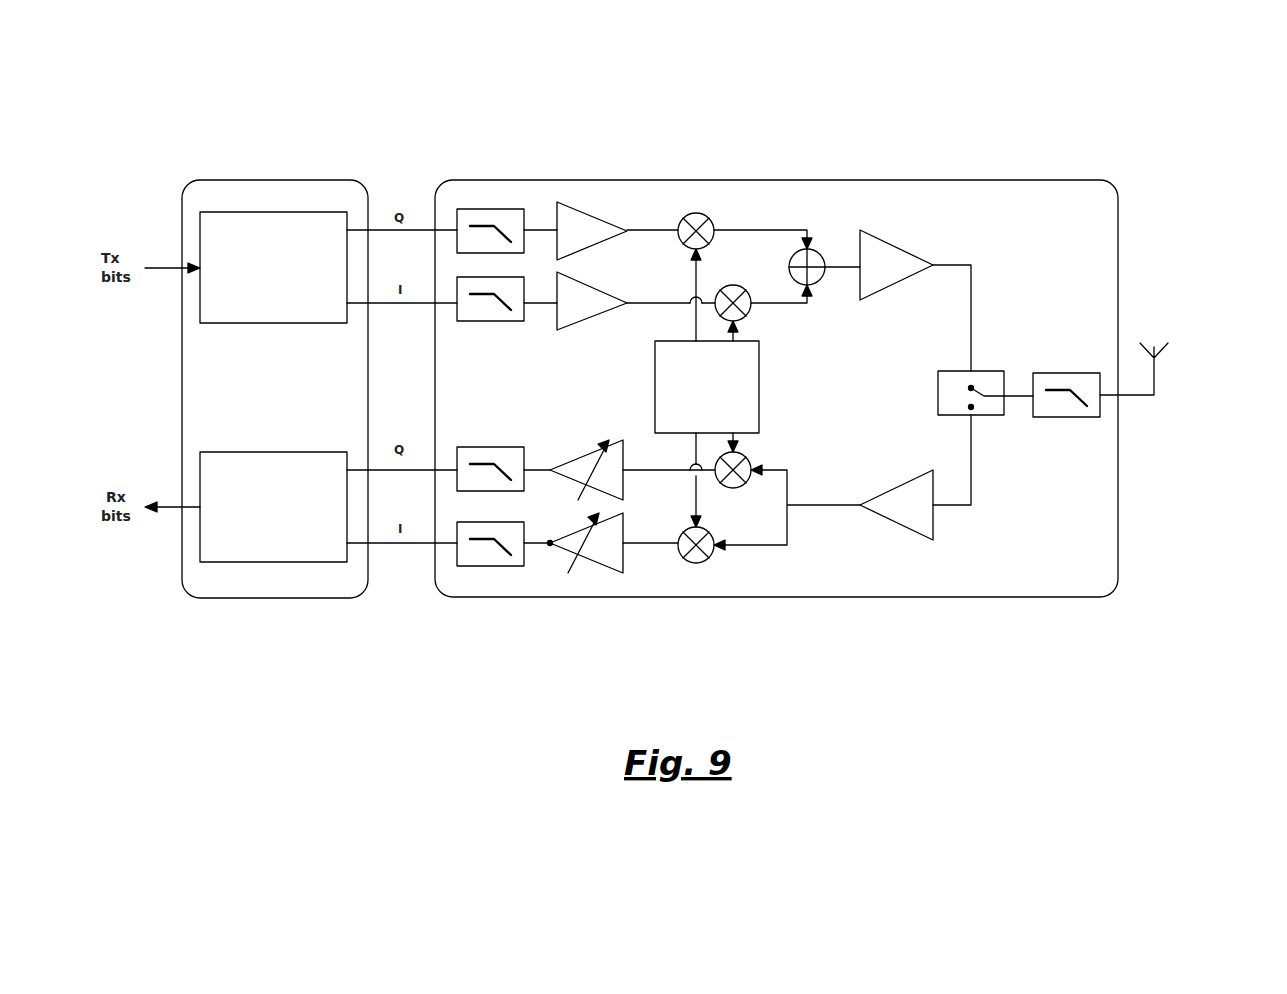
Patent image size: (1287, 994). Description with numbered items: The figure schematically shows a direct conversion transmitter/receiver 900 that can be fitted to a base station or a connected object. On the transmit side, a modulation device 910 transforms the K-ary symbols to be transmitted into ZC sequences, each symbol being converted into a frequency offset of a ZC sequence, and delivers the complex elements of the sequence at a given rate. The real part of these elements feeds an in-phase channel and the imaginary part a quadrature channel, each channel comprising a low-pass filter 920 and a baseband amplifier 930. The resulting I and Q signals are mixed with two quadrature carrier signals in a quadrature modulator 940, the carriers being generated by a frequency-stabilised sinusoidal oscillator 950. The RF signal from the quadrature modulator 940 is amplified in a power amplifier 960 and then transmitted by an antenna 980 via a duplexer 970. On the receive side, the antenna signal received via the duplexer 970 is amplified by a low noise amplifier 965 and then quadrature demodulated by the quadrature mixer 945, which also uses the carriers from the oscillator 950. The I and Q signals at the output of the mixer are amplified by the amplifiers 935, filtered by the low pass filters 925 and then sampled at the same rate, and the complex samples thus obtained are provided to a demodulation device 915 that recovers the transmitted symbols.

The transmitter/receiver 900 is at (1188, 239).
The modulation device 910 is at (283, 212).
The demodulation device 915 is at (285, 562).
The low-pass filter 920 is at (492, 209).
The low pass filters 925 is at (487, 566).
The baseband amplifier 930 is at (588, 207).
The amplifiers 935 is at (593, 562).
The quadrature modulator 940 is at (699, 213).
The quadrature mixer 945 is at (716, 553).
The frequency-stabilised sinusoidal oscillator 950 is at (655, 388).
The power amplifier 960 is at (877, 240).
The low noise amplifier 965 is at (893, 540).
The duplexer 970 is at (983, 371).
The antenna 980 is at (1154, 377).